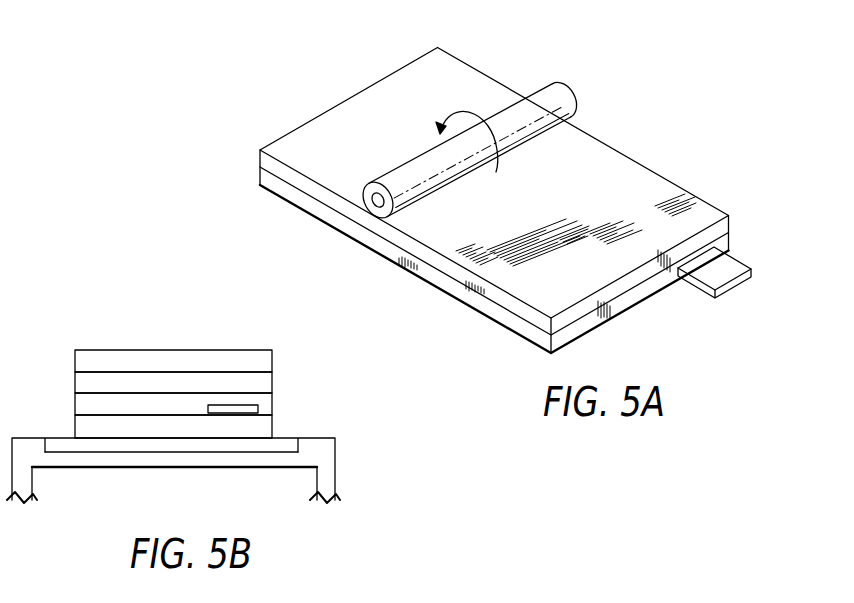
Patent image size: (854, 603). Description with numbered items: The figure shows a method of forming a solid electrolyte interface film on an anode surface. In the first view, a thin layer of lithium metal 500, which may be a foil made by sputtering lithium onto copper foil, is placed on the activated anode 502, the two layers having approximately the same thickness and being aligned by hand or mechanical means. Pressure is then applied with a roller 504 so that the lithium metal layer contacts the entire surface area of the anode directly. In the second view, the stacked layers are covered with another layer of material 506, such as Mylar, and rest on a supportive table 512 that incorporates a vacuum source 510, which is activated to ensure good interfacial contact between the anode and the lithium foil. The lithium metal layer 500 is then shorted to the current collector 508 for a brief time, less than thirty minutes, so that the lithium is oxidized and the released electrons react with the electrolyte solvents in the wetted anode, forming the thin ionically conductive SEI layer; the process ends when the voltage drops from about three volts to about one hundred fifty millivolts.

In FIG. 5A, the lithium metal layer 500 is at (283, 171).
In FIG. 5B, the lithium metal layer 500 is at (272, 382).
In FIG. 5A, the anode 502 is at (325, 215).
In FIG. 5B, the anode 502 is at (272, 403).
In FIG. 5A, the roller 504 is at (548, 90).
In FIG. 5B, the layer of material 506 is at (272, 360).
In FIG. 5A, the current collector 508 is at (729, 272).
In FIG. 5B, the current collector 508 is at (233, 413).
In FIG. 5B, the vacuum source 510 is at (202, 445).
In FIG. 5B, the supportive table 512 is at (335, 465).